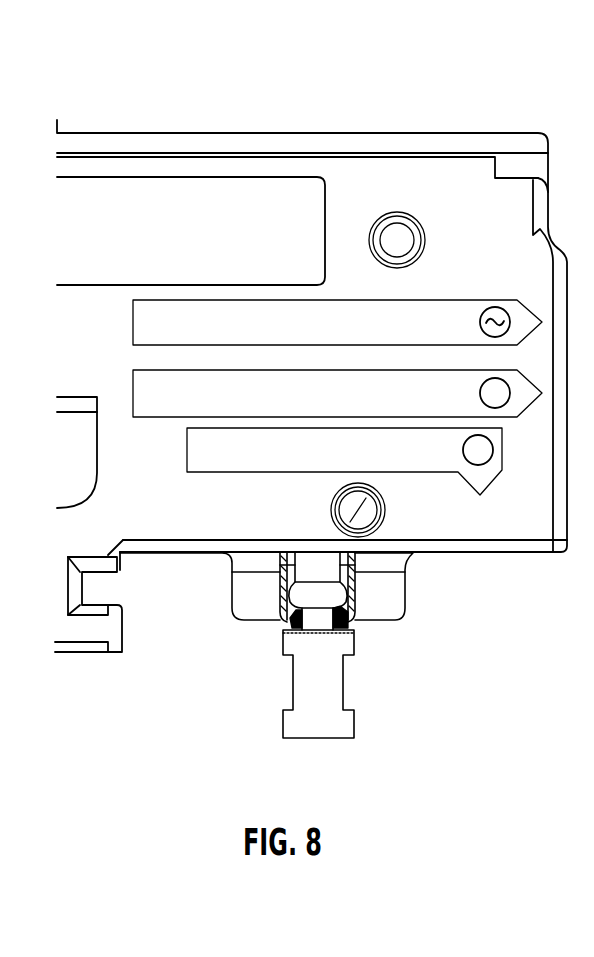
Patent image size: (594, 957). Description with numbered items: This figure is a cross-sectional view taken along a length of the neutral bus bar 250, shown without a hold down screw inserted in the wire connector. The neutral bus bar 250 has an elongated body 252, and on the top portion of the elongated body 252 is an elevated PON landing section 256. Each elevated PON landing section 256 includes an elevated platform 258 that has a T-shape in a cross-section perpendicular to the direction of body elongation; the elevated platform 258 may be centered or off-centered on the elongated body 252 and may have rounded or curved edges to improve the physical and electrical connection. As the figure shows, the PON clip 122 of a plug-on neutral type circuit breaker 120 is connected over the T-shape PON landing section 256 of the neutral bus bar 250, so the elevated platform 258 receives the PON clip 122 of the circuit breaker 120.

The plug-on neutral type circuit breaker 120 is at (345, 152).
The PON clip 122 is at (282, 622).
The neutral bus bar 250 is at (300, 672).
The elongated body 252 is at (320, 738).
The elevated PON landing section 256 is at (345, 618).
The elevated platform 258 is at (335, 590).